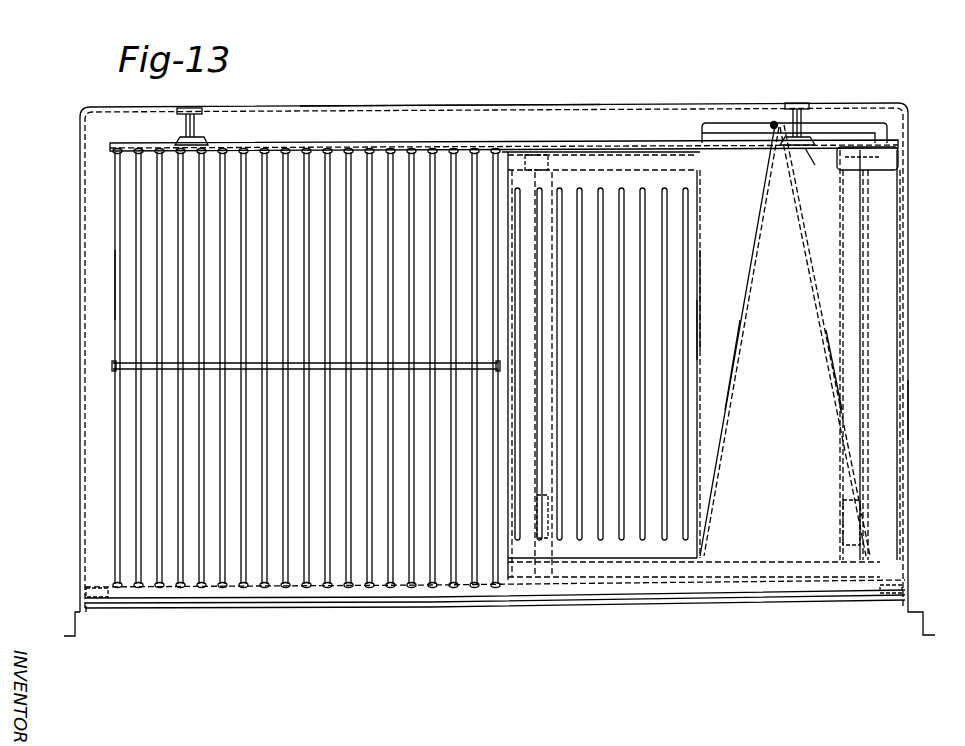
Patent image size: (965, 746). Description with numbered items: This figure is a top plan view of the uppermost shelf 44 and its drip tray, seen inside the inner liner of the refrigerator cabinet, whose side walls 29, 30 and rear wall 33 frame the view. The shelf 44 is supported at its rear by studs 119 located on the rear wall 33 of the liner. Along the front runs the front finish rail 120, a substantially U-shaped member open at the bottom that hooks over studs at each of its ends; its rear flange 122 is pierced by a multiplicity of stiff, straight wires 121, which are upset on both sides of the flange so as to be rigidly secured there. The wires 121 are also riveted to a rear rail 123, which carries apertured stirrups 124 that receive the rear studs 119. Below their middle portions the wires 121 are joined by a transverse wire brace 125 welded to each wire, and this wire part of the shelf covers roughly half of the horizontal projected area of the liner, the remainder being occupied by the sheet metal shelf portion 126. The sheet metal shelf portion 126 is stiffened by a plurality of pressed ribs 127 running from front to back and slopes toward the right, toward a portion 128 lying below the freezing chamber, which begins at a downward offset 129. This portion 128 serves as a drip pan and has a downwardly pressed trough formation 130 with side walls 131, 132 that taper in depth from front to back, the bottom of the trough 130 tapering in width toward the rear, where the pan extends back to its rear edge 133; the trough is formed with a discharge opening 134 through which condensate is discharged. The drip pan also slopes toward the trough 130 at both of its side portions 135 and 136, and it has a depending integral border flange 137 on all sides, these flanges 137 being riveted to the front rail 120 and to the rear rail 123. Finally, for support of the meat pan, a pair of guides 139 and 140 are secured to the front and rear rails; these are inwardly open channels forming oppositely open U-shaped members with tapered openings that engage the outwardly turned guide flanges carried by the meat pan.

The side wall 29 is at (80, 213).
The side wall 30 is at (909, 410).
The rear wall 33 is at (438, 106).
The uppermost shelf 44 is at (110, 283).
The rear studs 119 is at (185, 126).
The front finish rail 120 is at (700, 600).
The wires 121 is at (160, 482).
The rear flange 122 is at (318, 590).
The rear rail 123 is at (296, 146).
The stirrups 124 is at (205, 140).
The transverse wire brace 125 is at (113, 366).
The sheet metal shelf portion 126 is at (700, 394).
The pressed ribs 127 is at (688, 528).
The drip pan portion 128 is at (730, 300).
The downward offset 129 is at (698, 324).
The trough 130 is at (812, 348).
The side wall 131 is at (722, 433).
The side wall 132 is at (840, 410).
The rear edge 133 is at (724, 124).
The discharge opening 134 is at (774, 122).
The side portion 135 is at (738, 241).
The side portion 136 is at (820, 247).
The border flange 137 is at (580, 152).
The guide 139 is at (552, 546).
The guide 140 is at (845, 534).